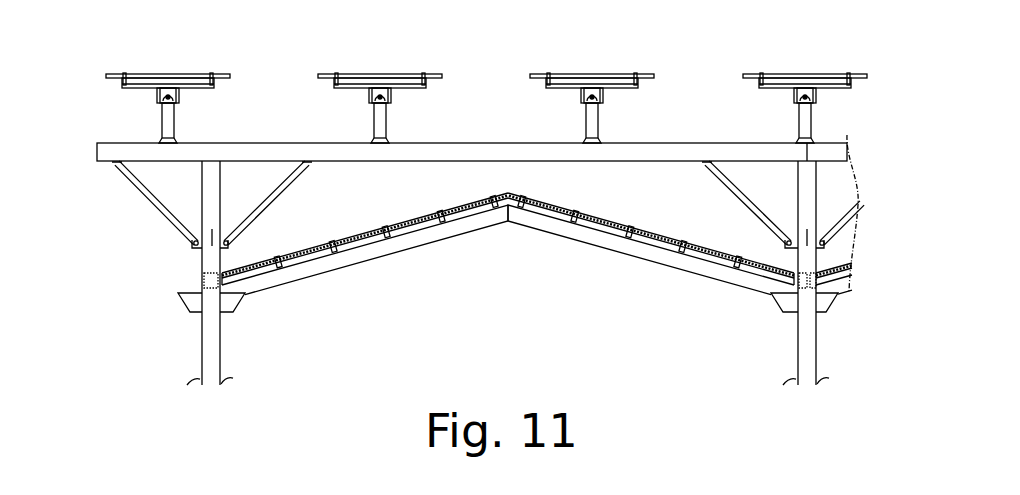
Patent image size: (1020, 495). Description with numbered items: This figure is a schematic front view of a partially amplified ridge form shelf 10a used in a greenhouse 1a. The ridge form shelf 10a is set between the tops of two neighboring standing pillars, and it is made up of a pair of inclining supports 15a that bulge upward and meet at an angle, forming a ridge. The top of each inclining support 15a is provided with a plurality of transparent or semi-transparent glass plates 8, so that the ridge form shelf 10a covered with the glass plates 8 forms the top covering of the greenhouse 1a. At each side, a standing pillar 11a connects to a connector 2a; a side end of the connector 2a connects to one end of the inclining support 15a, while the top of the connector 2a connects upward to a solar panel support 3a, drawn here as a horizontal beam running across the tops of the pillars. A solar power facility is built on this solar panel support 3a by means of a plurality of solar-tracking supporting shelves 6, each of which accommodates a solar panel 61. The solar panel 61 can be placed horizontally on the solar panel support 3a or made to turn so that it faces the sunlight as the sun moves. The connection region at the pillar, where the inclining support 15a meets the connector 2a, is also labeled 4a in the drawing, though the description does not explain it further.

The greenhouse 1a is at (148, 274).
The connector 2a is at (823, 287).
The solar panel support 3a is at (488, 143).
The rafter clamp connection 4a is at (812, 266).
The solar-tracking supporting shelf 6 is at (380, 118).
The solar panel 61 is at (374, 76).
The glass plate 8 is at (665, 236).
The ridge form shelf 10a is at (346, 276).
The standing pillar 11a is at (802, 346).
The inclining support 15a is at (650, 256).